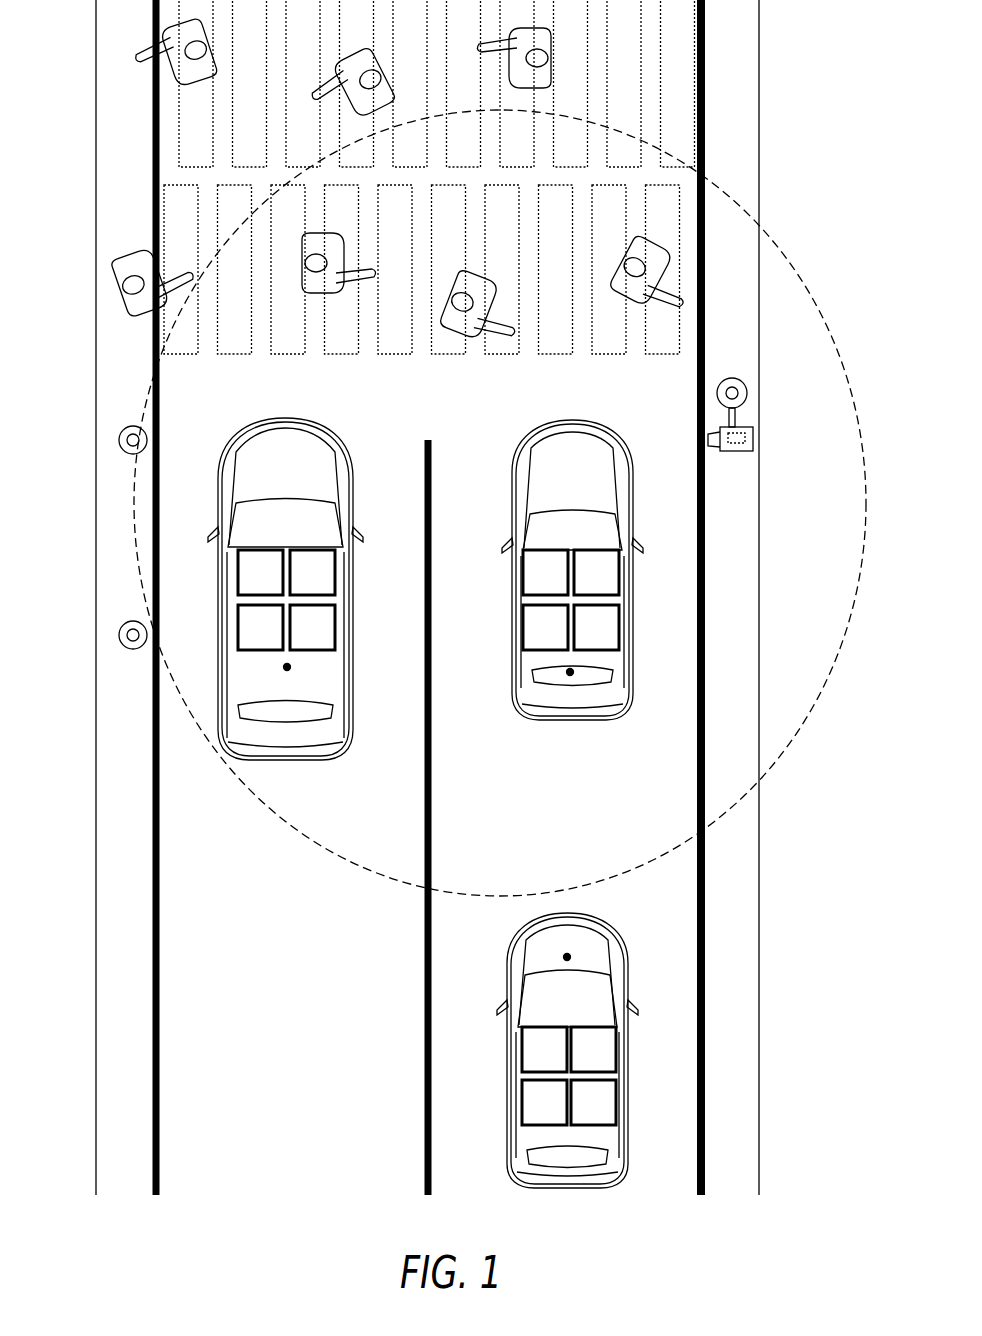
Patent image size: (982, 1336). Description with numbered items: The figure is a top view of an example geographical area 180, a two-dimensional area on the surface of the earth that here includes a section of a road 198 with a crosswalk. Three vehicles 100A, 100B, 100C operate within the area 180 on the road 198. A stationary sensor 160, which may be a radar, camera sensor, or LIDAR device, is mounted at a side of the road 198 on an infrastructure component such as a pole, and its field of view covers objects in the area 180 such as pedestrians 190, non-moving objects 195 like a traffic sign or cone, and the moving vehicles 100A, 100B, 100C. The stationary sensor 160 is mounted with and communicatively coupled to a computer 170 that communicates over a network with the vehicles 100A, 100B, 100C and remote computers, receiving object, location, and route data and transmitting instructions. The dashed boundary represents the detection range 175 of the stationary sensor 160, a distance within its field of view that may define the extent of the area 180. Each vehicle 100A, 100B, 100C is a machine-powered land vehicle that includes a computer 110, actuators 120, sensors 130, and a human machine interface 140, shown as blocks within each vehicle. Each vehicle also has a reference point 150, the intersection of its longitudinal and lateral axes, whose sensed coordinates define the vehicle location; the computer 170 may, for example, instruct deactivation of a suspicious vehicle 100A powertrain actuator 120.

The vehicle 100A is at (575, 1013).
The vehicle 100B is at (292, 479).
The vehicle 100C is at (577, 499).
The computer 110 is at (266, 588).
The actuator 120 is at (266, 643).
The sensor 130 is at (318, 588).
The human machine interface 140 is at (318, 643).
The reference point 150 is at (290, 668).
The stationary sensor 160 is at (755, 446).
The computer 170 is at (771, 430).
The detection range 175 is at (800, 277).
The geographical area 180 is at (783, 109).
The pedestrian 190 is at (120, 268).
The stationary object 195 is at (119, 432).
The road 198 is at (292, 1026).